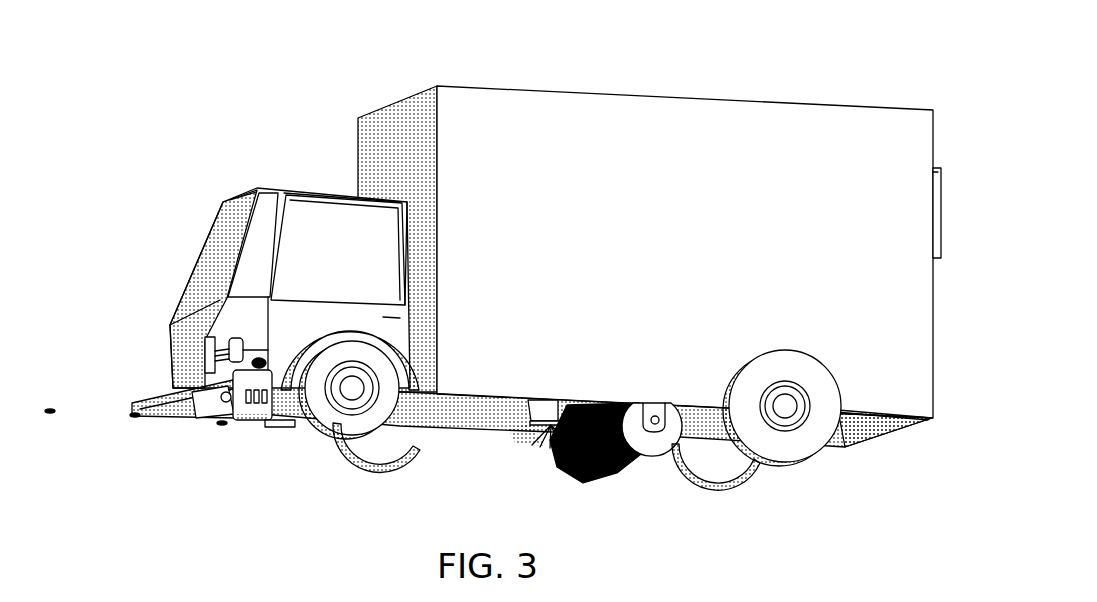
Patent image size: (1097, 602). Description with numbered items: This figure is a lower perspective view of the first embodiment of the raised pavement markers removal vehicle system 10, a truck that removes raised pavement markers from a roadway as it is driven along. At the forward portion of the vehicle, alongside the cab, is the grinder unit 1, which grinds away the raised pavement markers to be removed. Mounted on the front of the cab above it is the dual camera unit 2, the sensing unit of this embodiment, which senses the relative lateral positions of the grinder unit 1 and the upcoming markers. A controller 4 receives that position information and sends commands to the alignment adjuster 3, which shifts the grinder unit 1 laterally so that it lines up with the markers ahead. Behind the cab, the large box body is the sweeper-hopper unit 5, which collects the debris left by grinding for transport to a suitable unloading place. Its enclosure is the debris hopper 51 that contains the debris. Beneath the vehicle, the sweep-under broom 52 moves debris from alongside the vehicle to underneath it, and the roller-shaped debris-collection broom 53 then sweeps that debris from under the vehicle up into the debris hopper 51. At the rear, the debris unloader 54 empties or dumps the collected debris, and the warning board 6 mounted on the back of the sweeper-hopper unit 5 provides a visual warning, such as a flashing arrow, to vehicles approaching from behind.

The raised pavement markers removal vehicle system 10 is at (502, 273).
The sweeper-hopper unit 5 is at (551, 273).
The debris hopper 51 is at (739, 102).
The warning board 6 is at (940, 165).
The dual camera unit 2 is at (232, 330).
The controller 4 is at (273, 367).
The alignment adjuster 3 is at (197, 416).
The grinder unit 1 is at (224, 436).
The sweep-under broom 52 is at (508, 440).
The debris-collection broom 53 is at (629, 466).
The debris unloader 54 is at (865, 447).